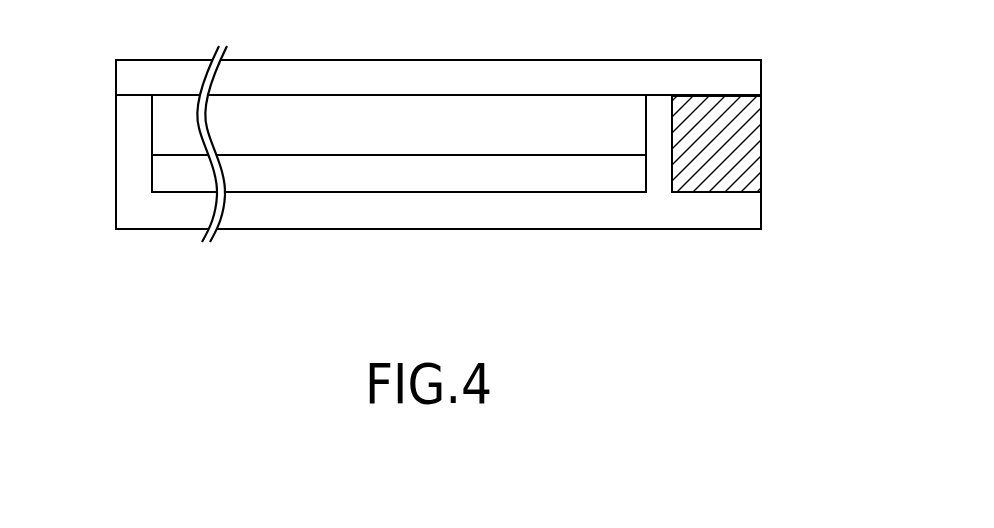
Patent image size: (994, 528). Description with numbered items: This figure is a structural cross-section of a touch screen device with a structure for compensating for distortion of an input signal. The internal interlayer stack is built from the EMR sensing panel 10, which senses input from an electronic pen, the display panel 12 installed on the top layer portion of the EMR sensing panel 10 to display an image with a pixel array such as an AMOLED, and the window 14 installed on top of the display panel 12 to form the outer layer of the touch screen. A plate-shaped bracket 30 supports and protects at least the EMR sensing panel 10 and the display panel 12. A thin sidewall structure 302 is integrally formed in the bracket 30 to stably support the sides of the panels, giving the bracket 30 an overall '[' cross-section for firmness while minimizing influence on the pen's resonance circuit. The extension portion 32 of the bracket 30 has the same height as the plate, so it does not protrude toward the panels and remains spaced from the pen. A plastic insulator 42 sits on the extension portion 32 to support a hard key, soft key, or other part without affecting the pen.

The EMR sensing panel 10 is at (165, 177).
The display panel 12 is at (165, 129).
The window 14 is at (123, 81).
The bracket 30 is at (450, 213).
The sidewall structure 302 is at (657, 152).
The extension portion 32 is at (750, 211).
The insulator 42 is at (758, 146).